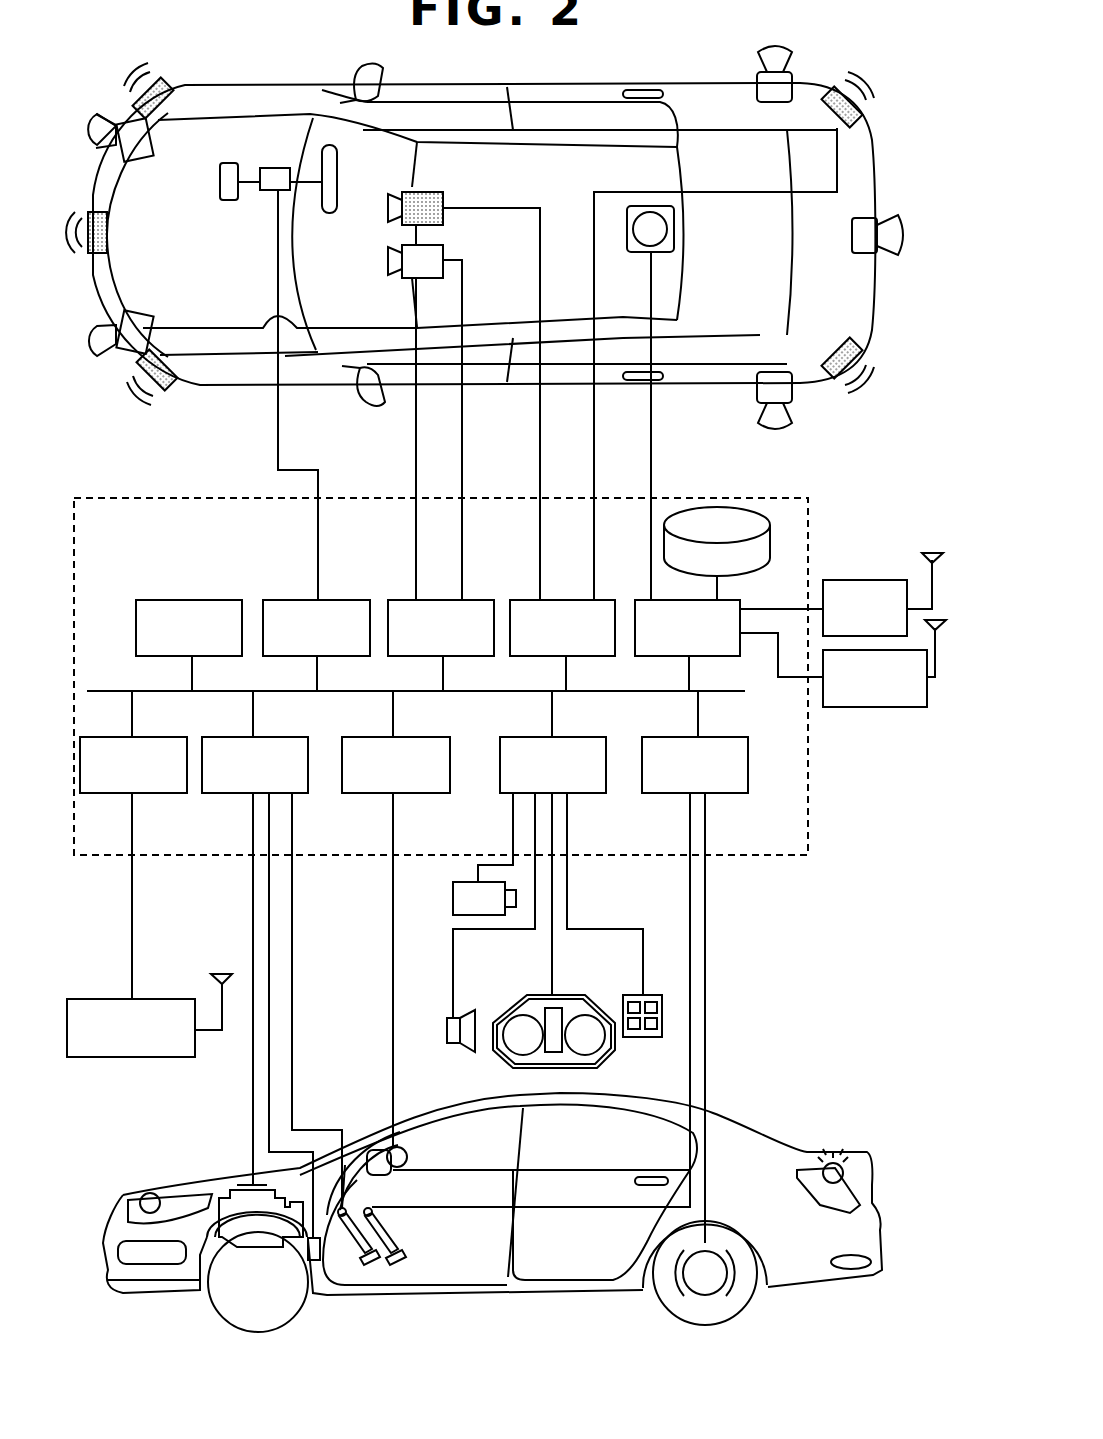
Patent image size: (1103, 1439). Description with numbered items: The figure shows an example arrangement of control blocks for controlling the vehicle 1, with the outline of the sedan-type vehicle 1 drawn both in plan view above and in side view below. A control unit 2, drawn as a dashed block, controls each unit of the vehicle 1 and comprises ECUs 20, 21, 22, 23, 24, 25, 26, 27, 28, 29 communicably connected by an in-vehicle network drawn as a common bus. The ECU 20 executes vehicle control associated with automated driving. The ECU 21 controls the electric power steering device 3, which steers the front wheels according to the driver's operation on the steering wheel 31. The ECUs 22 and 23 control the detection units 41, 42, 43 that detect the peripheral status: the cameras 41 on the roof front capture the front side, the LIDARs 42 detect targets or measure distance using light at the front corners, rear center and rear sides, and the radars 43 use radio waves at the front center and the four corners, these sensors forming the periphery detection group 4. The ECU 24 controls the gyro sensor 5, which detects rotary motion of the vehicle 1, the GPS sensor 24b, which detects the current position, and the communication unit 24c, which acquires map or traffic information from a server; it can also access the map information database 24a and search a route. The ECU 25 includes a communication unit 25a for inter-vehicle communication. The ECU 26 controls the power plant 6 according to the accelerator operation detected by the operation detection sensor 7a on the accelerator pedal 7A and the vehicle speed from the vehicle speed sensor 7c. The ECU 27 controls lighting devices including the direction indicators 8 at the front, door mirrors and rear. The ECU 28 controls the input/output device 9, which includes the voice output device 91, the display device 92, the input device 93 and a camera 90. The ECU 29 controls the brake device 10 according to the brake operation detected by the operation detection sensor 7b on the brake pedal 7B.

The vehicle 1 is at (883, 143).
The control unit 2 is at (790, 858).
The electric power steering device 3 is at (230, 200).
The steering wheel 31 is at (330, 213).
The external sensor group 4 is at (117, 86).
The camera 41 is at (443, 218).
The LIDAR 42 is at (142, 160).
The radar 43 is at (153, 115).
The gyro sensor 5 is at (675, 227).
The power plant 6 is at (227, 1190).
The accelerator pedal 7A is at (378, 1254).
The brake pedal 7B is at (397, 1243).
The operation detection sensor 7a is at (365, 1140).
The operation detection sensor 7b is at (372, 1208).
The vehicle speed sensor 7c is at (320, 1262).
The direction indicator 8 is at (140, 1196).
The input/output device 9 is at (485, 1067).
The camera 90 is at (453, 897).
The voice output device 91 is at (447, 1030).
The display device 92 is at (513, 1010).
The input device 93 is at (633, 1037).
The brake device 10 is at (705, 1296).
The ECU 20 is at (220, 598).
The ECU 21 is at (352, 598).
The ECU 22 is at (443, 598).
The ECU 23 is at (573, 598).
The ECU 24 is at (640, 598).
The map information database 24a is at (716, 502).
The GPS sensor 24b is at (878, 580).
The communication unit 24c is at (877, 710).
The ECU 25 is at (163, 795).
The communication unit 25a is at (132, 1058).
The ECU 26 is at (233, 795).
The ECU 27 is at (428, 795).
The ECU 28 is at (593, 795).
The ECU 29 is at (733, 795).